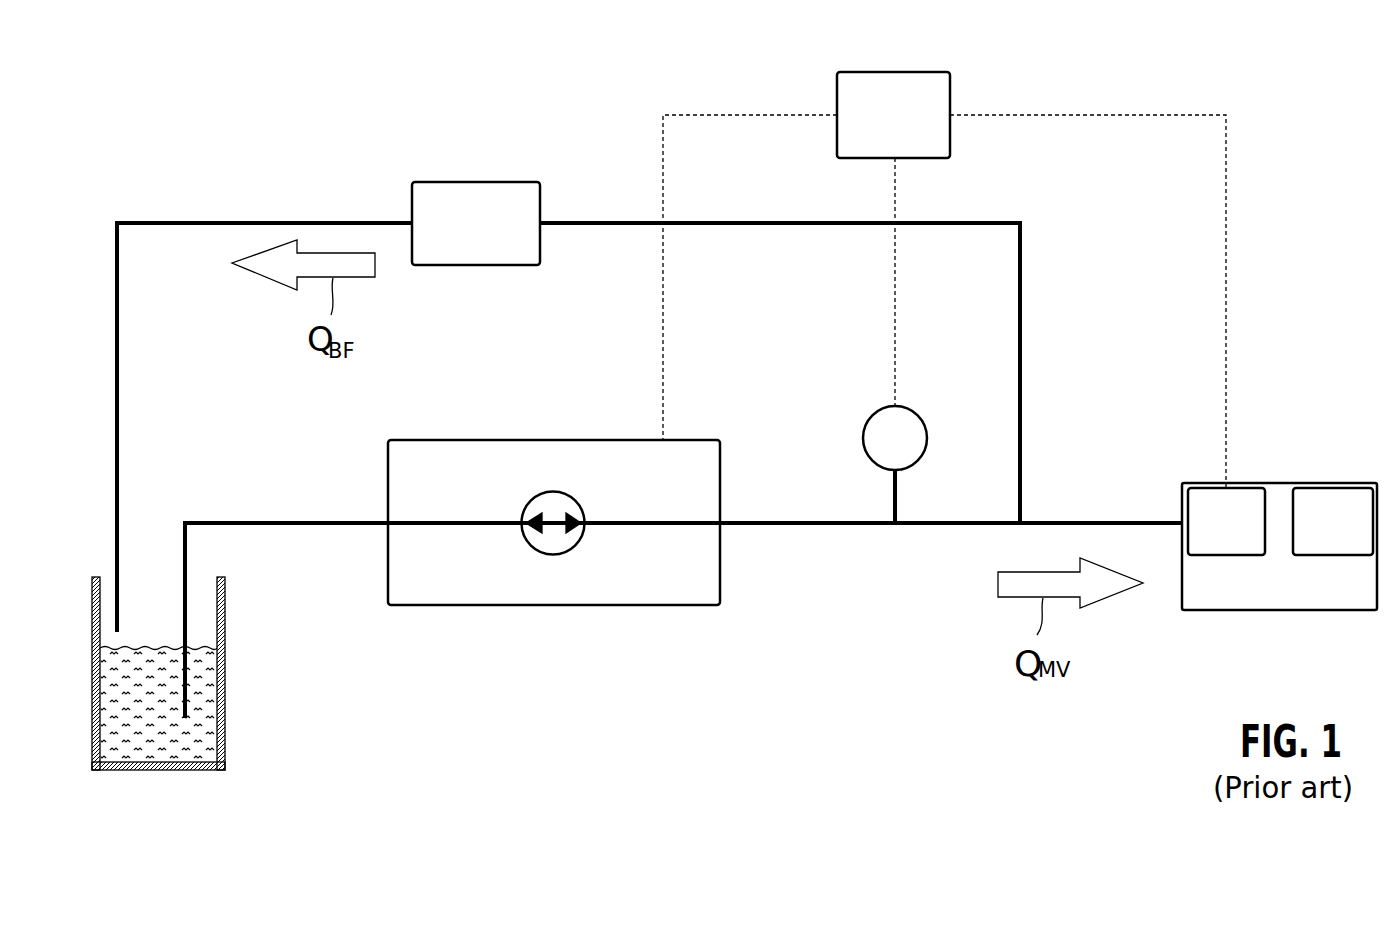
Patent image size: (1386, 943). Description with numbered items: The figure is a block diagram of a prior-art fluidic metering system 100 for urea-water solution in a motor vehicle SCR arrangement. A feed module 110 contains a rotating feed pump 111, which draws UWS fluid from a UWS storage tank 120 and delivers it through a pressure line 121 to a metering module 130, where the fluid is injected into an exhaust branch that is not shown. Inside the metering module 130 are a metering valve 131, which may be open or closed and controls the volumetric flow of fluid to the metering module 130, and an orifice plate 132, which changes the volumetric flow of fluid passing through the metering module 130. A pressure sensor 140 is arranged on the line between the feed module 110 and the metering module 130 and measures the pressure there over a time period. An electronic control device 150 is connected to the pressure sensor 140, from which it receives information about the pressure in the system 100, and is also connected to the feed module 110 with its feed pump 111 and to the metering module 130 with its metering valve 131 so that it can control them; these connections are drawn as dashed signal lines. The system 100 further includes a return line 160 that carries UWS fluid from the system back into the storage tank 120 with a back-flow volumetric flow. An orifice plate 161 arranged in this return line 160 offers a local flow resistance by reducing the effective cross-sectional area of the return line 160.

The fluidic metering system 100 is at (231, 144).
The feed module 110 is at (553, 607).
The feed pump 111 is at (586, 512).
The UWS storage tank 120 is at (225, 712).
The pressure line 121 is at (1095, 520).
The metering module 130 is at (1280, 612).
The metering valve 131 is at (1195, 483).
The orifice plate 132 is at (1330, 487).
The pressure sensor 140 is at (927, 437).
The electronic control device 150 is at (950, 90).
The return line 160 is at (785, 218).
The orifice plate 161 is at (475, 179).